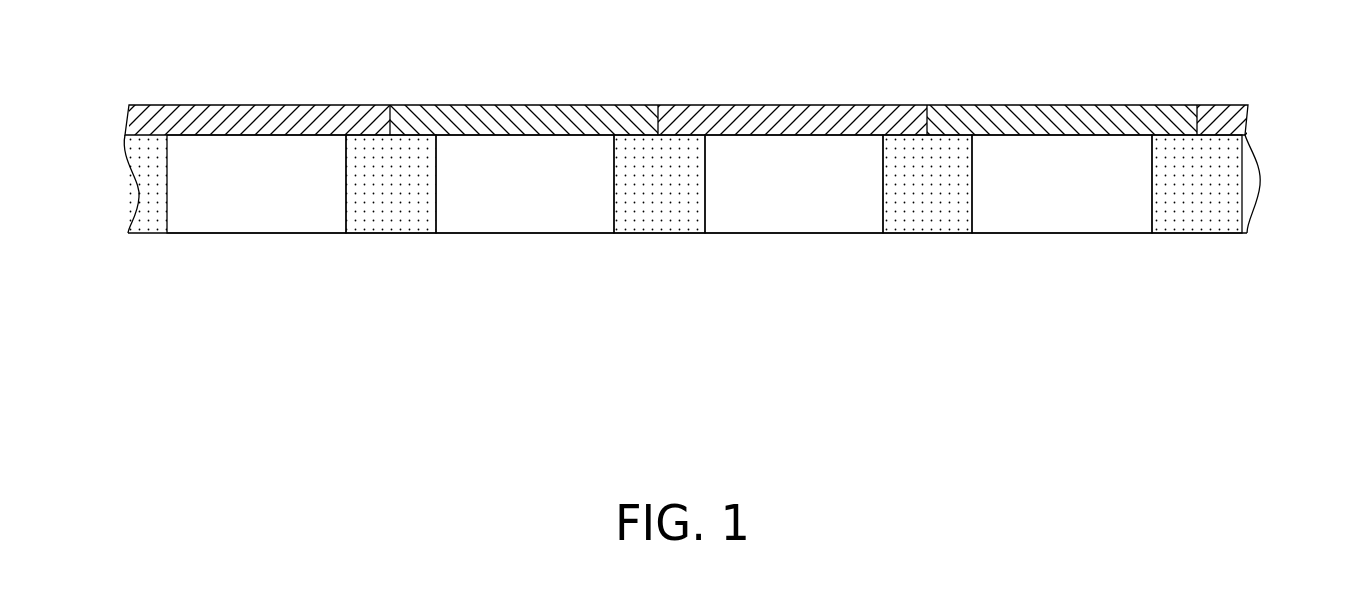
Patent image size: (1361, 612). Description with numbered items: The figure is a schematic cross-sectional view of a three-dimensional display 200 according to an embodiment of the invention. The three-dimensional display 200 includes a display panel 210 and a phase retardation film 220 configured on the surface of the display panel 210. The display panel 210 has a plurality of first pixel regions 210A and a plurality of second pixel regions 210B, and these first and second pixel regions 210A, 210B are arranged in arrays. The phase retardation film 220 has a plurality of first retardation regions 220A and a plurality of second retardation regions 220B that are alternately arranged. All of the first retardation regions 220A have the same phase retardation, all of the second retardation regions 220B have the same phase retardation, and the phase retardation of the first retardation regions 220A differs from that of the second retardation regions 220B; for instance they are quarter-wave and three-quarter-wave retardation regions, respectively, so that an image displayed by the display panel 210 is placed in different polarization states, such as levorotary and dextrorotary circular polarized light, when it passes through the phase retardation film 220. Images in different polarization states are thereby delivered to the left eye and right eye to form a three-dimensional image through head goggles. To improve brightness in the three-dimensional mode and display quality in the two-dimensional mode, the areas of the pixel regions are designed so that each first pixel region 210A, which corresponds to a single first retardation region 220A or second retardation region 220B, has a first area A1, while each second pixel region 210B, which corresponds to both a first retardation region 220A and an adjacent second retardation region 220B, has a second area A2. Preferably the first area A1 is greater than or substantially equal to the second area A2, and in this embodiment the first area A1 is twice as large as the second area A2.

The 3D display 200 is at (1254, 403).
The display panel 210 is at (1273, 135).
The first pixel regions 210A is at (253, 218).
The second pixel regions 210B is at (402, 218).
The phase retardation film 220 is at (1273, 105).
The first retardation regions 220A is at (240, 115).
The second retardation regions 220B is at (513, 115).
The first area A1 is at (883, 240).
The second area A2 is at (973, 240).